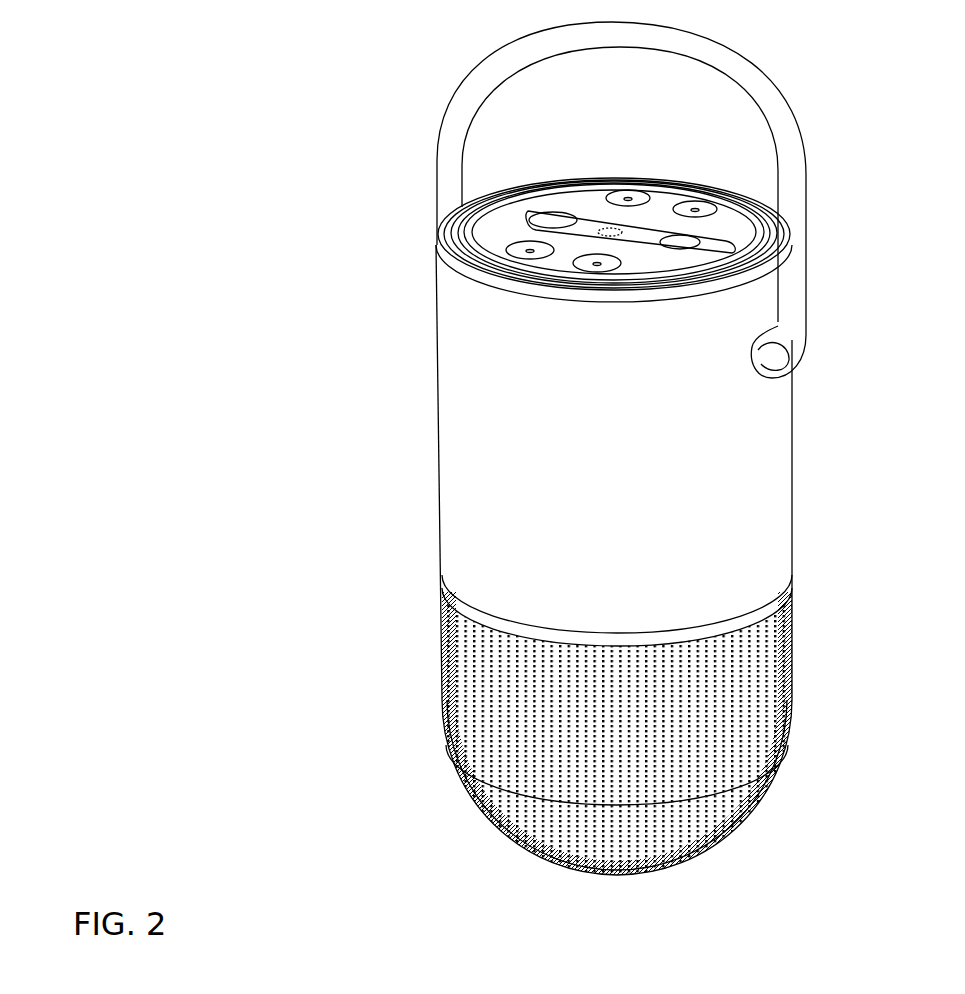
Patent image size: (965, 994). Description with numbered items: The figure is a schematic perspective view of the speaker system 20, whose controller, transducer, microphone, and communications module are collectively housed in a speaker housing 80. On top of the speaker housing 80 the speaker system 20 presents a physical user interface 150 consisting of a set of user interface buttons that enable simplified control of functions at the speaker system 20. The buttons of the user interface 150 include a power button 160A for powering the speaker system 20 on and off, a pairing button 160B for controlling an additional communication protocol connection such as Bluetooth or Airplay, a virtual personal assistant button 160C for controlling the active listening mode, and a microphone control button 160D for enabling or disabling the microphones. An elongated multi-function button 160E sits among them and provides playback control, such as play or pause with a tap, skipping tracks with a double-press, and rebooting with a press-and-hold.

The speaker system 20 is at (296, 129).
The user interface 150 is at (419, 202).
The speaker housing 80 is at (813, 410).
The power button 160A is at (628, 202).
The pairing button 160B is at (520, 235).
The virtual personal assistant (VPA) button 160C is at (697, 207).
The microphone control button 160D is at (624, 255).
The multi-function button (MFB) 160E is at (590, 229).